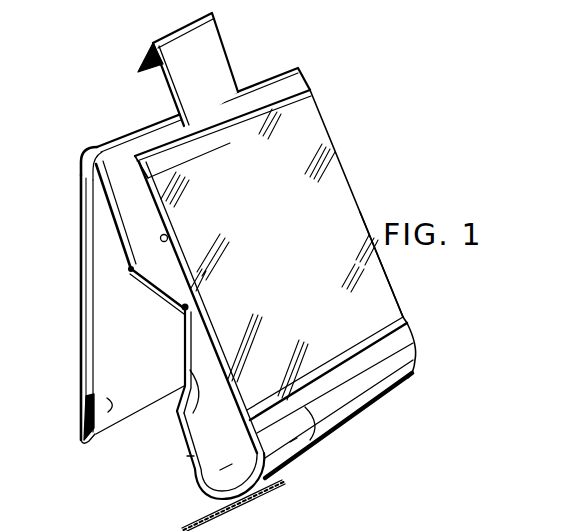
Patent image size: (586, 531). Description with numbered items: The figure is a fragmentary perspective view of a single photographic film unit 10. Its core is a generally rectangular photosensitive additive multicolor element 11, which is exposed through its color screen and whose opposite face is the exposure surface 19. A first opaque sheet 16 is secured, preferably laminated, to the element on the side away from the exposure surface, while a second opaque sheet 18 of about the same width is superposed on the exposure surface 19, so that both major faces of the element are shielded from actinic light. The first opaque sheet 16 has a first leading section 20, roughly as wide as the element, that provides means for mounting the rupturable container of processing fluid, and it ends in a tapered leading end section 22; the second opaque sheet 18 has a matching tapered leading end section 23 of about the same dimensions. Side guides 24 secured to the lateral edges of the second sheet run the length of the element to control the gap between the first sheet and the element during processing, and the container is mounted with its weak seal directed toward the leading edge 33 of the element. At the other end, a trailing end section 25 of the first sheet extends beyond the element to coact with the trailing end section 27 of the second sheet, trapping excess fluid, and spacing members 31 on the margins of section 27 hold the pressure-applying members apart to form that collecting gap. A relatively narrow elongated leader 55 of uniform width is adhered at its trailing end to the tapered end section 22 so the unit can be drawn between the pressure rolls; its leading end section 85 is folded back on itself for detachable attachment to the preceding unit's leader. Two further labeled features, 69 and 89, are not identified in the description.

The film unit 10 is at (345, 170).
The photosensitive additive multicolor element 11 is at (356, 200).
The first opaque sheet 16 is at (167, 236).
The second opaque sheet 18 is at (77, 293).
The exposure surface 19 is at (368, 288).
The first leading section 20 is at (214, 452).
The tapered leading end section 22 is at (180, 413).
The tapered leading end section 23 is at (155, 270).
The side guides 24 is at (88, 224).
The trailing end section 25 is at (298, 78).
The trailing end section 27 is at (99, 431).
The spacing members 31 is at (88, 423).
The leading edge 33 is at (311, 434).
The leader 55 is at (214, 52).
The support member 69 is at (371, 527).
The leading end section 85 is at (143, 63).
The panel face 89 is at (116, 332).